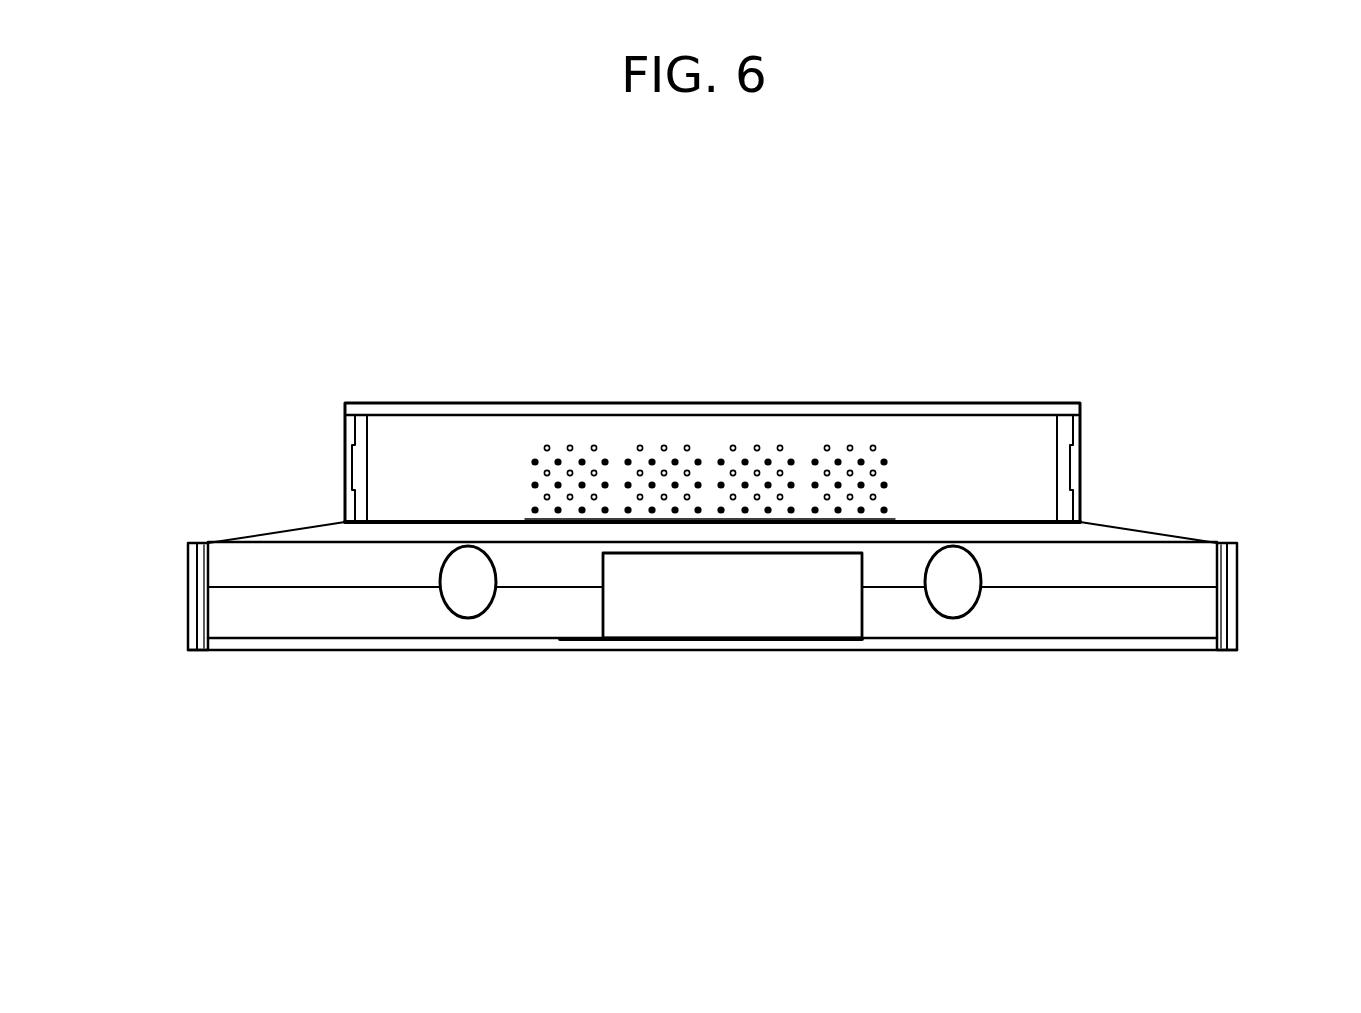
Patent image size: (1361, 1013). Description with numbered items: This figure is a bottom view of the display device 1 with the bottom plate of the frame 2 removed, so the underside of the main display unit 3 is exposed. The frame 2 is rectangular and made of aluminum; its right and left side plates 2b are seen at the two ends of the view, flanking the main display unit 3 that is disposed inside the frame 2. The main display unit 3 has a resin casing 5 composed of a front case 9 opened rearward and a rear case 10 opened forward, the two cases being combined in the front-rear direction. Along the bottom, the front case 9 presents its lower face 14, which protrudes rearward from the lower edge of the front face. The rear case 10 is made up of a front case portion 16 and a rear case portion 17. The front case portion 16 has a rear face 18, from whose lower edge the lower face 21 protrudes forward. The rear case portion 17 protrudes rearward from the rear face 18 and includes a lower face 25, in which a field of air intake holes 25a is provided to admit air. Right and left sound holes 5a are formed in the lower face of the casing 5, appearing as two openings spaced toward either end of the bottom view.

The display device 1 is at (1080, 270).
The frame 2 is at (1238, 560).
The side plates 2b is at (187, 573).
The main display unit 3 is at (1005, 435).
The casing 5 is at (1133, 283).
The sound holes 5a is at (443, 570).
The front case 9 is at (1155, 595).
The rear case 10 is at (1090, 548).
The lower face 14 is at (1053, 618).
The front case portion 16 is at (260, 547).
The rear case portion 17 is at (482, 447).
The rear face 18 is at (305, 527).
The lower face 21 is at (332, 550).
The lower face 25 is at (960, 437).
The air intake holes 25a is at (583, 485).